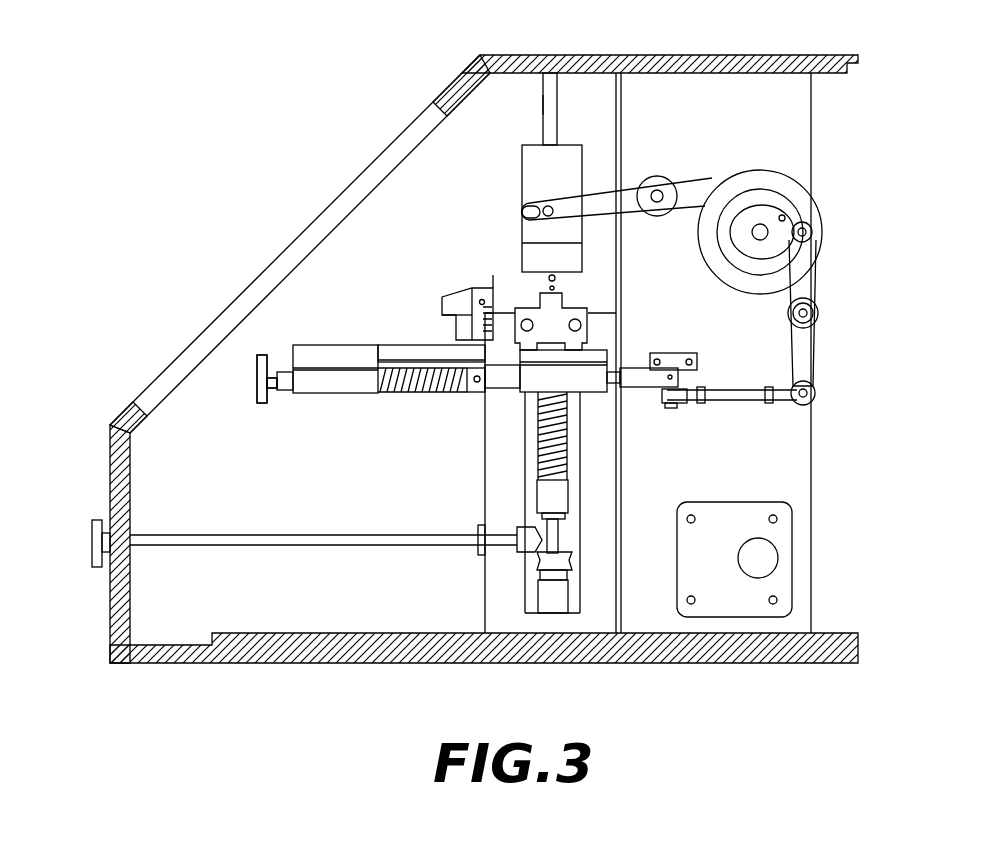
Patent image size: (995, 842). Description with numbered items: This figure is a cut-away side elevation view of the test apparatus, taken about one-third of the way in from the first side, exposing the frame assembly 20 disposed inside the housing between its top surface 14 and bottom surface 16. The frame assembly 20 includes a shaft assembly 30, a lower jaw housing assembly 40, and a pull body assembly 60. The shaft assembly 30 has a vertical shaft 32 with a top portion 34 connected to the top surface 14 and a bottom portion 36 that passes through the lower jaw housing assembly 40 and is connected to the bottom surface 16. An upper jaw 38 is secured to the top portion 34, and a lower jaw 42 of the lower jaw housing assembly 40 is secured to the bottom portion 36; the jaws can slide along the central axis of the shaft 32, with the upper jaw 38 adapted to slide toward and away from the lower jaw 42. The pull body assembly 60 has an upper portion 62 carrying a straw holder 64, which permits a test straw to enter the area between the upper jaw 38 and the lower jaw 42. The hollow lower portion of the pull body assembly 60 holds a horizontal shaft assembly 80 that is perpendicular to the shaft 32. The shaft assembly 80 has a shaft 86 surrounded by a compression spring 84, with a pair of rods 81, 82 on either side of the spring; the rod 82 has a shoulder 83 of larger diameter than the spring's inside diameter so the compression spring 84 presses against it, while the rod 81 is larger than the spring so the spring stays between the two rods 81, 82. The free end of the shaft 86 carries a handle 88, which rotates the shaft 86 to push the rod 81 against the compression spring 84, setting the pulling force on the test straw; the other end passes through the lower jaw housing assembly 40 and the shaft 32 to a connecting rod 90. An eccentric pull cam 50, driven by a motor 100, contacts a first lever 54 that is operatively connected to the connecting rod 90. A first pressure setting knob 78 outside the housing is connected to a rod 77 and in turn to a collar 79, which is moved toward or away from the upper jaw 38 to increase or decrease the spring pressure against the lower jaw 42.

The top surface 14 is at (778, 54).
The bottom surface 16 is at (652, 650).
The frame assembly 20 is at (755, 141).
The shaft assembly 30 is at (522, 193).
The shaft 32 is at (562, 107).
The top portion 34 is at (543, 100).
The bottom portion 36 is at (557, 600).
The upper jaw 38 is at (543, 167).
The lower jaw housing assembly 40 is at (570, 445).
The lower jaw 42 is at (573, 293).
The pull cam 50 is at (820, 196).
The first lever 54 is at (822, 362).
The pull body assembly 60 is at (250, 380).
The upper portion 62 is at (288, 350).
The straw holder 64 is at (452, 288).
The rod 77 is at (383, 535).
The first pressure setting knob 78 is at (100, 562).
The collar 79 is at (532, 542).
The shaft assembly 80 is at (414, 400).
The rod 81 is at (288, 393).
The rod 82 is at (500, 385).
The shoulder 83 is at (477, 387).
The compression spring 84 is at (432, 397).
The shaft 86 is at (270, 402).
The handle 88 is at (262, 355).
The connecting rod 90 is at (735, 405).
The motor 100 is at (797, 547).